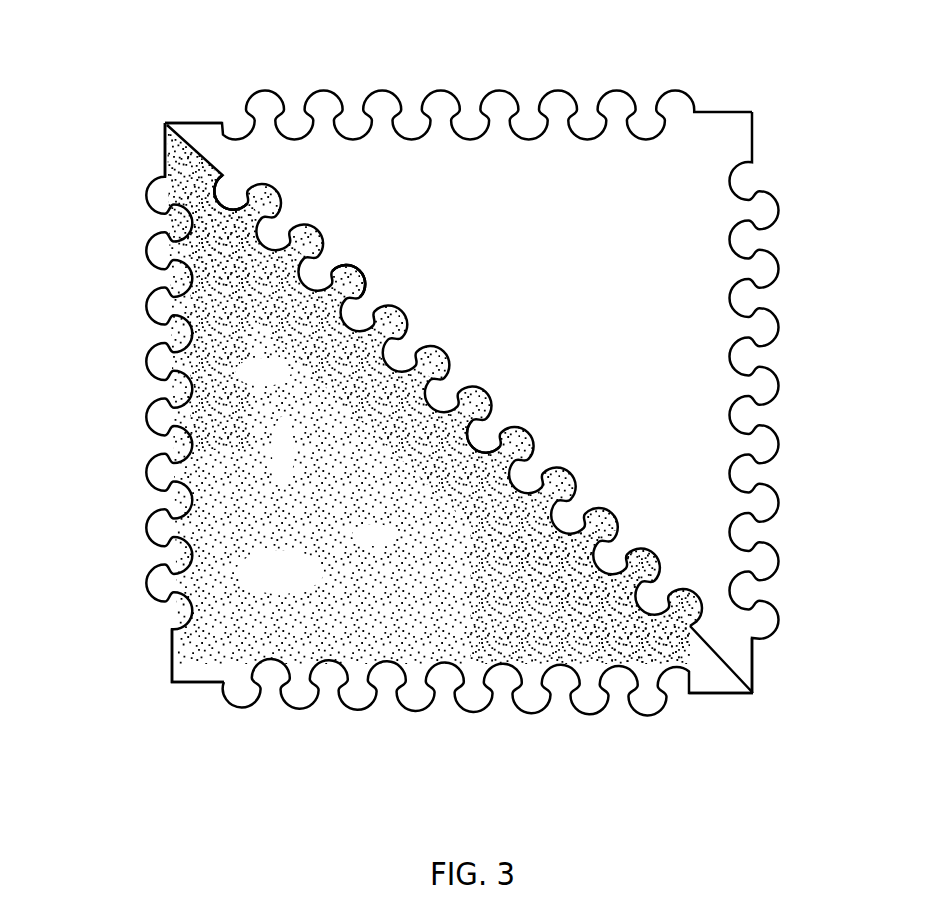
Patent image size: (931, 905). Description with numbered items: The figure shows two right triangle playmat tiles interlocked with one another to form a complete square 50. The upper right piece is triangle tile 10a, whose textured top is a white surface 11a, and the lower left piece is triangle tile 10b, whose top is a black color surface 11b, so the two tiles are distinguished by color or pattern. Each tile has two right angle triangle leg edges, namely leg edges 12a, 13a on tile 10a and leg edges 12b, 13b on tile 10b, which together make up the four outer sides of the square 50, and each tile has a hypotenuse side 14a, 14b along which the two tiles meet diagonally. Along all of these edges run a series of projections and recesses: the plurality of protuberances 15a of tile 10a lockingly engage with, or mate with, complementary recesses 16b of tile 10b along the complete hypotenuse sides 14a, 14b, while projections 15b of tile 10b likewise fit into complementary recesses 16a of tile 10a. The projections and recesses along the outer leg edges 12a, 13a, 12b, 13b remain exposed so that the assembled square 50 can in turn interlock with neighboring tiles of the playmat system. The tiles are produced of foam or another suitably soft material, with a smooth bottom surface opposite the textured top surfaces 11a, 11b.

The square 50 is at (442, 394).
The triangle tile 10a is at (743, 650).
The triangle tile 10b is at (195, 650).
The white surface 11a is at (515, 351).
The black color surface 11b is at (386, 449).
The right angle triangle leg edge 12a is at (714, 92).
The right angle triangle leg edge 12b is at (275, 722).
The right angle triangle leg edge 13a is at (781, 130).
The right angle triangle leg edge 13b is at (117, 473).
The hypotenuse side 14a is at (502, 409).
The hypotenuse side 14b is at (447, 468).
The protuberance 15a is at (232, 197).
The projection 15b is at (343, 285).
The recess 16a is at (355, 270).
The recess 16b is at (228, 212).